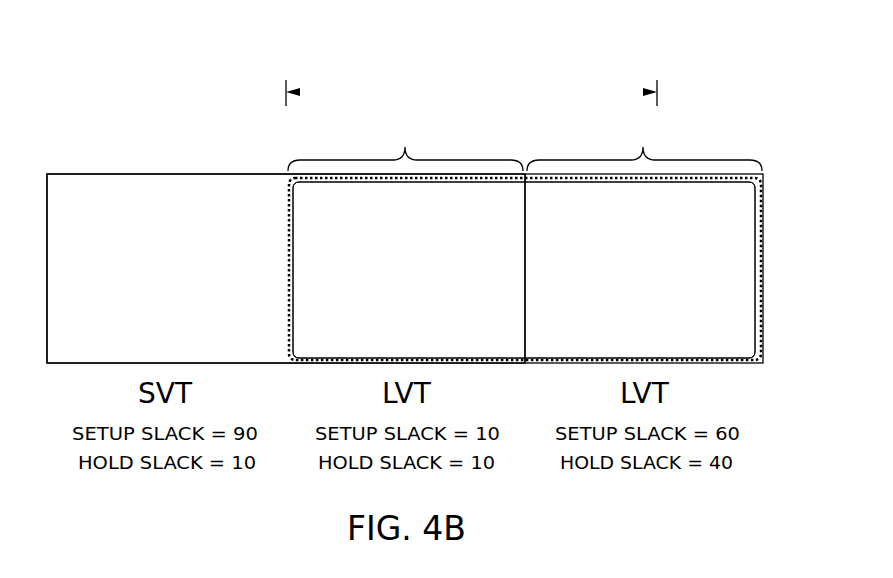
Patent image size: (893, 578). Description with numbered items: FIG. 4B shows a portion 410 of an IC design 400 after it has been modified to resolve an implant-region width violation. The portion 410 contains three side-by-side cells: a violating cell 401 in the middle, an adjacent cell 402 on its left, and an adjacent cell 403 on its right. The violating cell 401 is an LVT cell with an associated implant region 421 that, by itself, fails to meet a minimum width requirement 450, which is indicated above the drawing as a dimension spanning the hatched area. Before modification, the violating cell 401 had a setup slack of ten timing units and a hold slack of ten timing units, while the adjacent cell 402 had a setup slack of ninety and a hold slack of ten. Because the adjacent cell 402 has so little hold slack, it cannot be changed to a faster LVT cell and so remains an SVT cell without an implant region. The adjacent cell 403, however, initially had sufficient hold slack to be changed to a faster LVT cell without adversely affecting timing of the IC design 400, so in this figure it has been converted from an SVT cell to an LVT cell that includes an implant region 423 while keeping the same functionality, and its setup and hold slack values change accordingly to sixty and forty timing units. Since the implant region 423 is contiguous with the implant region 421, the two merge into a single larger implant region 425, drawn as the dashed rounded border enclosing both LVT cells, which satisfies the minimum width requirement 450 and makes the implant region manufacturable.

The IC design 400 is at (98, 114).
The portion of the IC design 410 is at (231, 140).
The adjacent cell 402 is at (188, 217).
The violating cell 401 is at (427, 217).
The adjacent cell 403 is at (667, 217).
The implant region 421 is at (405, 147).
The implant region 423 is at (643, 147).
The single larger implant region 425 is at (765, 192).
The minimum width requirement 450 is at (472, 92).